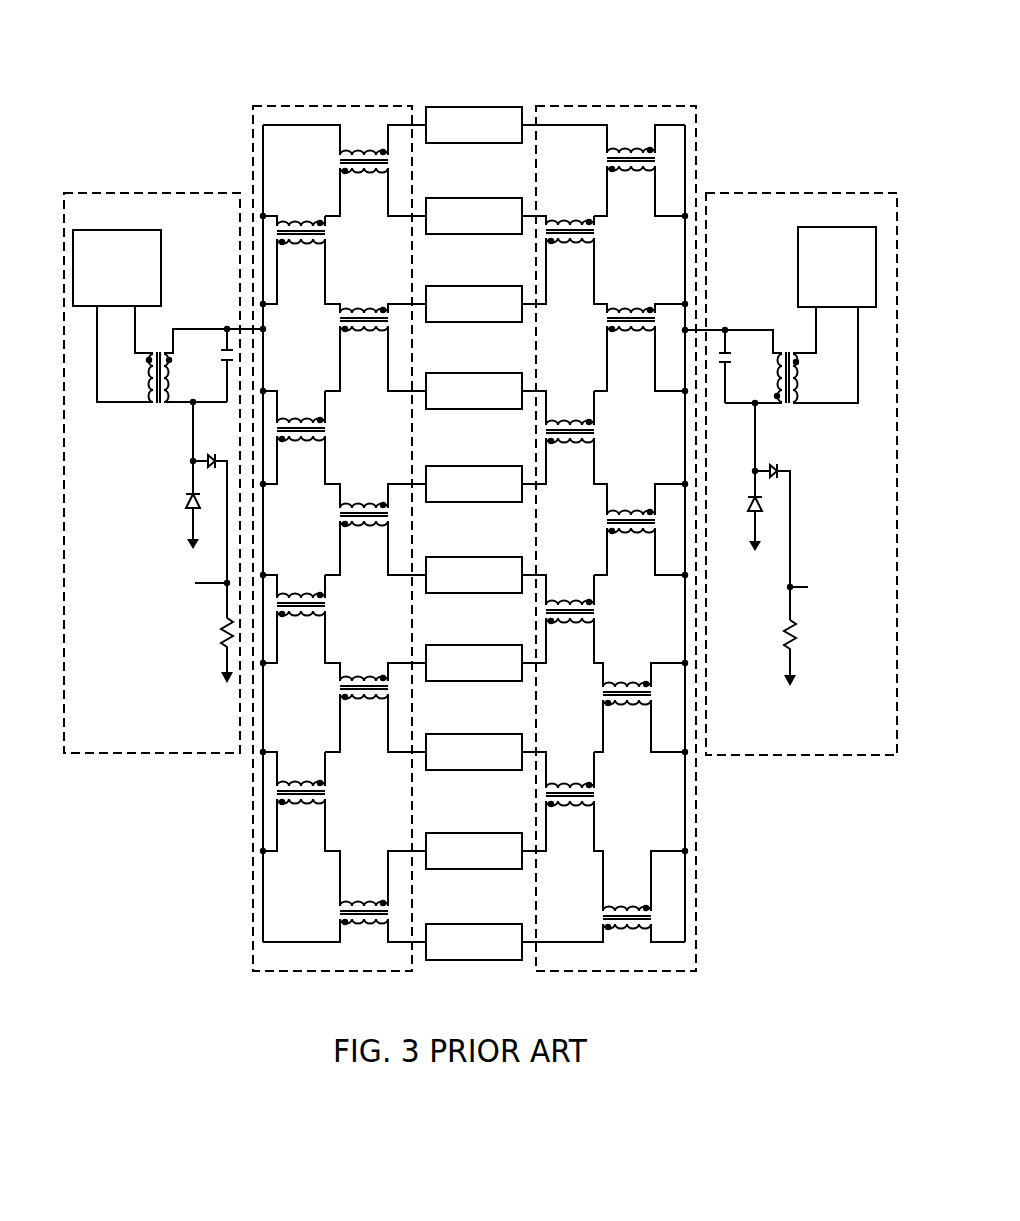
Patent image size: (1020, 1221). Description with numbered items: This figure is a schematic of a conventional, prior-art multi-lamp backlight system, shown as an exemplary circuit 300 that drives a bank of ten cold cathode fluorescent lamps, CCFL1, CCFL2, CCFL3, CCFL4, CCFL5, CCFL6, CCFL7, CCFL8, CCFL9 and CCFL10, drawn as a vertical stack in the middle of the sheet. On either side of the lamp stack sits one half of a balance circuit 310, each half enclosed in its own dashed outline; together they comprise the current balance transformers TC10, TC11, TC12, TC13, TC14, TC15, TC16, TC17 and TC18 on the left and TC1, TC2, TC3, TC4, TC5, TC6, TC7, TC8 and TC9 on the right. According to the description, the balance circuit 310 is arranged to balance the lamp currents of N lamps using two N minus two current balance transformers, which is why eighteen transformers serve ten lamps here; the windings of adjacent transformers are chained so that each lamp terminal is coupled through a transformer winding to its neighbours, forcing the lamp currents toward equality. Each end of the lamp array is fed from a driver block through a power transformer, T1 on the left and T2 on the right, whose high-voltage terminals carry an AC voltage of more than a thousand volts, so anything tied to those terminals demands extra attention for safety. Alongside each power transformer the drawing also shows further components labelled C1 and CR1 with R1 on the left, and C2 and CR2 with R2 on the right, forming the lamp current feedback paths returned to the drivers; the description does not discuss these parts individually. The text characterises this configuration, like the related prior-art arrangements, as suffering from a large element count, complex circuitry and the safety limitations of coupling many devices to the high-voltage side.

The exemplary circuit 300 is at (198, 101).
The balance circuit 310 is at (360, 106).
The power transformer T1 is at (159, 365).
The power transformer T2 is at (786, 366).
The left resonant capacitor C1 is at (213, 365).
The right resonant capacitor C2 is at (738, 366).
The left feedback diode CR1 is at (171, 475).
The right feedback diode CR2 is at (737, 477).
The left lamp current sense resistor R1 is at (215, 650).
The right lamp current sense resistor R2 is at (777, 653).
The lamp CCFL1 is at (474, 125).
The lamp CCFL2 is at (474, 216).
The lamp CCFL3 is at (474, 304).
The lamp CCFL4 is at (474, 391).
The lamp CCFL5 is at (474, 484).
The cold cathode fluorescent lamp 6 CCFL6 is at (474, 575).
The cold cathode fluorescent lamp 7 CCFL7 is at (474, 663).
The cold cathode fluorescent lamp 8 CCFL8 is at (474, 752).
The cold cathode fluorescent lamp 9 CCFL9 is at (474, 851).
The cold cathode fluorescent lamp 10 CCFL10 is at (474, 942).
The current balance transformer TC1 is at (603, 170).
The current balance transformer TC2 is at (580, 260).
The current balance transformer TC3 is at (627, 347).
The current balance transformer TC4 is at (582, 437).
The current balance transformer TC5 is at (624, 529).
The current balance transformer TC6 is at (580, 619).
The current balance transformer TC7 is at (623, 707).
The current balance transformer TC8 is at (579, 801).
The current balance transformer TC9 is at (603, 896).
The current balance transformer TC10 is at (344, 170).
The current balance transformer TC11 is at (319, 260).
The current balance transformer TC12 is at (355, 347).
The current balance transformer TC13 is at (321, 437).
The current balance transformer TC14 is at (355, 529).
The current balance transformer TC15 is at (320, 619).
The current balance transformer TC16 is at (355, 707).
The current balance transformer TC17 is at (320, 801).
The current balance transformer TC18 is at (344, 896).